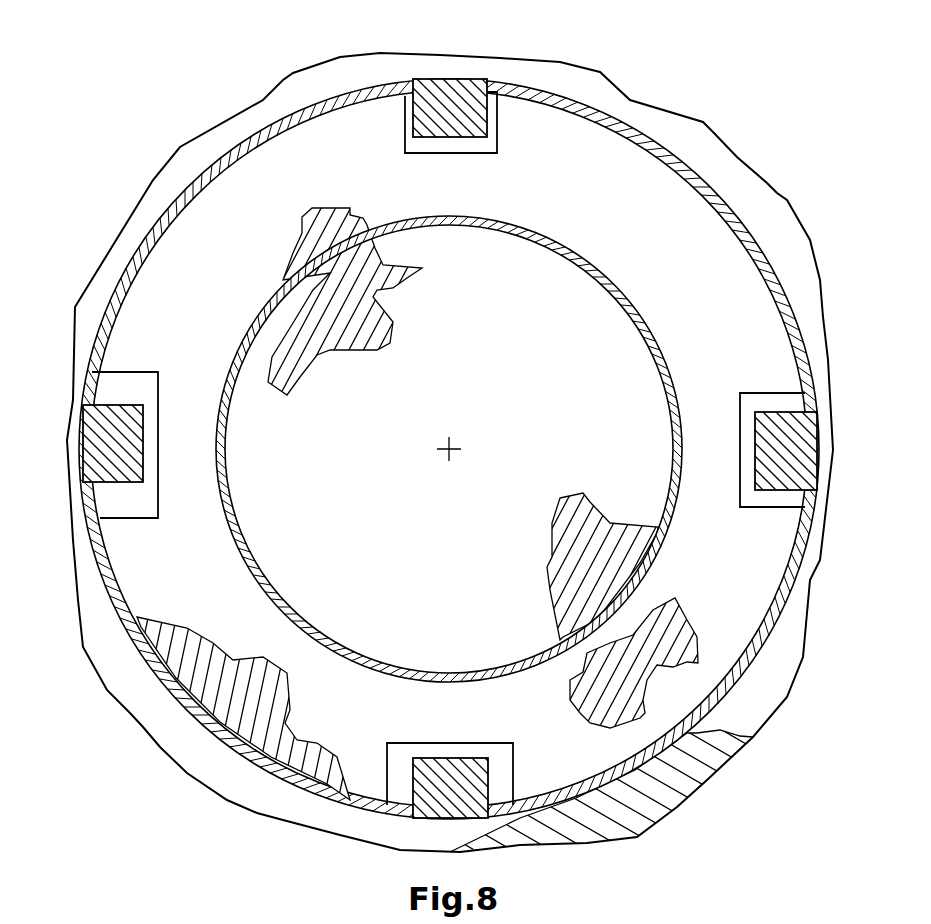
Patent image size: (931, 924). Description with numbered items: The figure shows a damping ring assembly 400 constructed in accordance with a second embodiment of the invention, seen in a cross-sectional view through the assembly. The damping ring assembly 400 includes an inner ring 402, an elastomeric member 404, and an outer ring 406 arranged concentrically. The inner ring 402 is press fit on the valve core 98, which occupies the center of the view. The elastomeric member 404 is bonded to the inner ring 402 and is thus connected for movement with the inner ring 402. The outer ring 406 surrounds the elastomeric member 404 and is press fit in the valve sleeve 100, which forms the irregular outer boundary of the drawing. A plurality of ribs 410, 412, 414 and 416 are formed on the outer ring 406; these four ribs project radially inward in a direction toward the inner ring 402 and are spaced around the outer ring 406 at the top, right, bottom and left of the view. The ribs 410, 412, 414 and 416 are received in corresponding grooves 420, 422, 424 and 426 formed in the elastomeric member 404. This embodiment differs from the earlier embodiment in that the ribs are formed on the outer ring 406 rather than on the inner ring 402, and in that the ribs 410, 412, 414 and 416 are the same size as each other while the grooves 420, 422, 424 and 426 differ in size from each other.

The damping ring assembly 400 is at (148, 116).
The valve sleeve 100 is at (295, 70).
The outer ring 406 is at (599, 102).
The inner ring 402 is at (644, 298).
The elastomeric member 404 is at (644, 192).
The rib 410 is at (447, 107).
The rib 412 is at (790, 460).
The rib 414 is at (445, 780).
The rib 416 is at (115, 445).
The groove 420 is at (450, 154).
The groove 422 is at (738, 492).
The groove 424 is at (430, 745).
The groove 426 is at (160, 395).
The valve core 98 is at (421, 556).